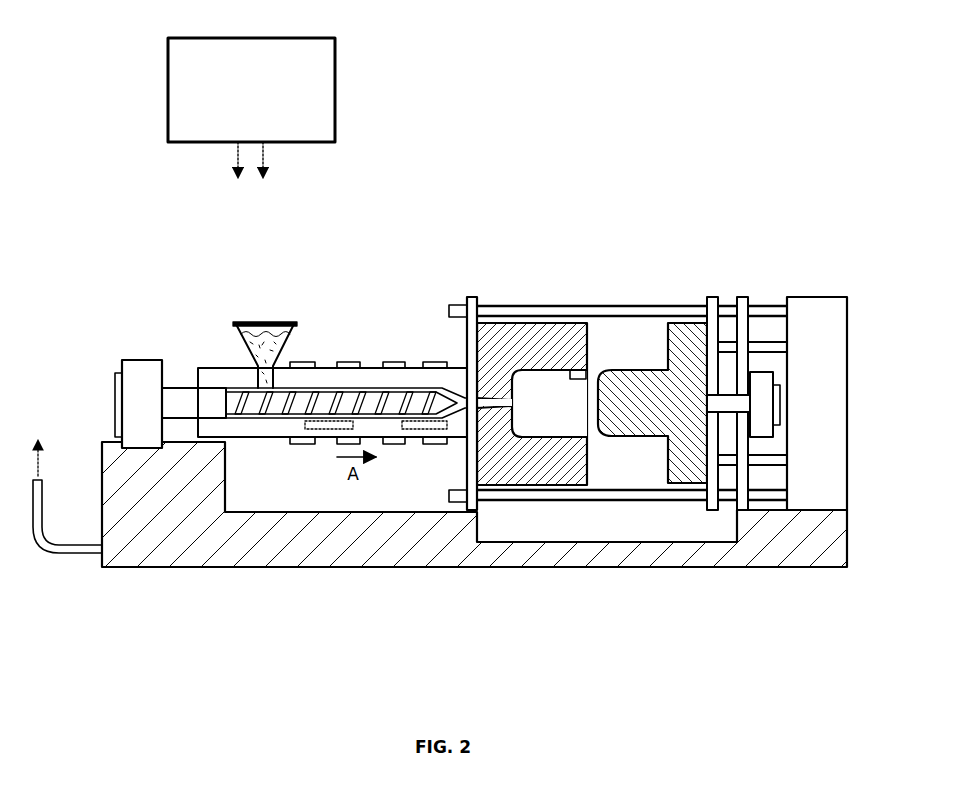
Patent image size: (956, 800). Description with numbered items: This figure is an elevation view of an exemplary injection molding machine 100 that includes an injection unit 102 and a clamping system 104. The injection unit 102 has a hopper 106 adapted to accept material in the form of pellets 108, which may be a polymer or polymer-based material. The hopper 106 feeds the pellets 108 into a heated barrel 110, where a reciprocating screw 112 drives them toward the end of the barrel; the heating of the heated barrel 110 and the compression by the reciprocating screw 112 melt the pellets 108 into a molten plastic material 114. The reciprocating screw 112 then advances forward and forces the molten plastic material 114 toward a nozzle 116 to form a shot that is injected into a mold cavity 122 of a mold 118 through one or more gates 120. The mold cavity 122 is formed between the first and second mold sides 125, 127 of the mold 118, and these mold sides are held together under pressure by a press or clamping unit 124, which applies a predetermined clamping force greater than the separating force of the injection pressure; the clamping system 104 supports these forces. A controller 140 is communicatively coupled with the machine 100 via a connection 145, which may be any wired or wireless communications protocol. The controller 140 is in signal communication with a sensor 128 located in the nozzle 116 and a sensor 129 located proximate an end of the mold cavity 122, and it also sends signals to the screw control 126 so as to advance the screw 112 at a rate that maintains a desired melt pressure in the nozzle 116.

The injection molding machine 100 is at (443, 186).
The injection unit 102 is at (312, 474).
The clamping system 104 is at (607, 572).
The hopper 106 is at (275, 322).
The pellets 108 is at (246, 345).
The heated barrel 110 is at (370, 362).
The reciprocating screw 112 is at (275, 402).
The molten plastic material 114 is at (420, 392).
The nozzle 116 is at (482, 396).
The mold 118 is at (589, 316).
The gates 120 is at (502, 400).
The mold cavity 122 is at (552, 378).
The press or clamping unit 124 is at (792, 289).
The first mold side 125 is at (538, 472).
The screw control 126 is at (395, 464).
The second mold side 127 is at (655, 427).
The sensor 128 is at (468, 400).
The sensor 129 is at (584, 369).
The controller 140 is at (313, 38).
The connection 145 is at (236, 160).